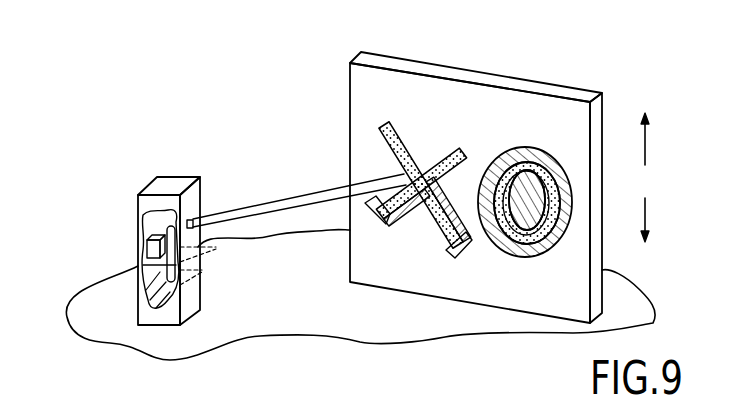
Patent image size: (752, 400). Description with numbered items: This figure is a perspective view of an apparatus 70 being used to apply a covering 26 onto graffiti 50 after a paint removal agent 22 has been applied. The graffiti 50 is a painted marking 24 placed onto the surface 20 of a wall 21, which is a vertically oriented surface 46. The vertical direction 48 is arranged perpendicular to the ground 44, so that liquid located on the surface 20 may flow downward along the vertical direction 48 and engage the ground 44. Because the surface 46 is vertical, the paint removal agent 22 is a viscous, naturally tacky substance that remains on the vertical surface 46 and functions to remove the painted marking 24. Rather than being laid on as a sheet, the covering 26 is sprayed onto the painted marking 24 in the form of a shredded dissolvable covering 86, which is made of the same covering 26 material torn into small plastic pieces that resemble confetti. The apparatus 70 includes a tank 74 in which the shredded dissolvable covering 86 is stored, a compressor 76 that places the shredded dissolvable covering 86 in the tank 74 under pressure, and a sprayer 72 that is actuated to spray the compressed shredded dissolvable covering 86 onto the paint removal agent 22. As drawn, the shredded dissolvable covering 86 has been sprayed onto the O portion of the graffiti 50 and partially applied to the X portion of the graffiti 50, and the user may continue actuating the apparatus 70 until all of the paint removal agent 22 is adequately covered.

The surface 20 is at (519, 127).
The wall 21 is at (595, 125).
The paint removal agent 22 is at (378, 138).
The painted markings 24 is at (450, 147).
The covering 26 is at (257, 207).
The ground 44 is at (294, 298).
The vertical surface 46 is at (394, 104).
The vertical direction 48 is at (644, 177).
The graffiti 50 is at (422, 230).
The apparatus 70 is at (130, 202).
The sprayer 72 is at (160, 227).
The tank 74 is at (157, 283).
The compressor 76 is at (150, 250).
The shredded dissolvable covering 86 is at (387, 223).